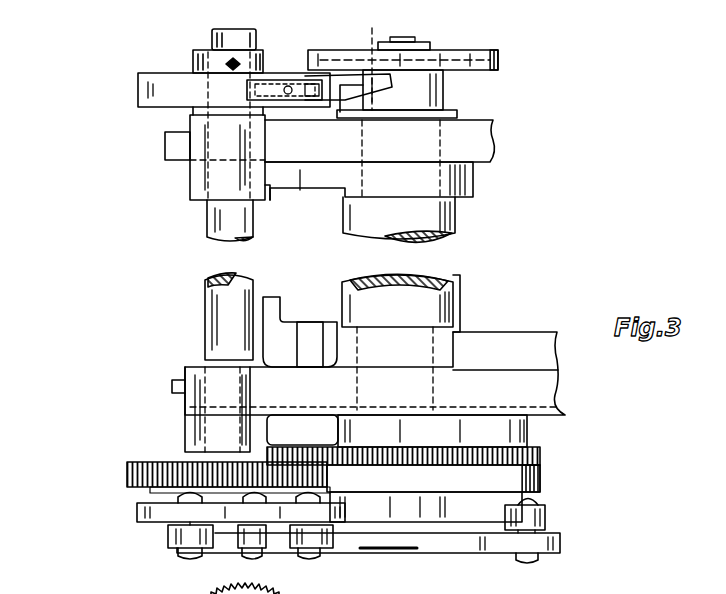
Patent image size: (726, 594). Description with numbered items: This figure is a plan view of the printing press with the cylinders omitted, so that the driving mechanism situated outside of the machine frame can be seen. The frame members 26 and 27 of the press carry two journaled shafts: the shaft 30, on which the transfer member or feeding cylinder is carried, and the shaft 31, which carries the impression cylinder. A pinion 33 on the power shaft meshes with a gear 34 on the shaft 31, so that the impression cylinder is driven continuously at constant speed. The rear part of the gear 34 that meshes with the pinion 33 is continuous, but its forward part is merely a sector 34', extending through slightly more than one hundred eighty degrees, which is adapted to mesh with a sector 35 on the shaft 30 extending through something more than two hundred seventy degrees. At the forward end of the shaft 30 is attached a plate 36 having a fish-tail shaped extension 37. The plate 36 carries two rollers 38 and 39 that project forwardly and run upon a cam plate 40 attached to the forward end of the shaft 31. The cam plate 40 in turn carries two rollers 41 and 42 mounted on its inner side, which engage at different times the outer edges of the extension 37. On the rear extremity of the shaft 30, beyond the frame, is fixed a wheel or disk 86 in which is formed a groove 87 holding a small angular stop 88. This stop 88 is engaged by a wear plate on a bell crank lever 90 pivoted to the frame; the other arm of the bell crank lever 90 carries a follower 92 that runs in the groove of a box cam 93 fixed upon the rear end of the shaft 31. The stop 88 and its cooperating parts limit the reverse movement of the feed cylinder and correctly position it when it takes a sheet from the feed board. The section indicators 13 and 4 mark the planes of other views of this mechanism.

The frame member 26 is at (500, 340).
The frame member 27 is at (488, 150).
The shaft 30 is at (212, 228).
The shaft 31 is at (443, 108).
The pinion 33 is at (523, 445).
The gear 34 is at (422, 458).
The sector 34' is at (454, 479).
The sector 35 is at (145, 463).
The plate 36 is at (150, 520).
The extension 37 is at (370, 508).
The roller 38 is at (171, 535).
The roller 39 is at (327, 552).
The cam plate 40 is at (463, 538).
The roller 41 is at (296, 549).
The roller 42 is at (548, 523).
The wheel or disk 86 is at (157, 76).
The groove 87 is at (272, 78).
The angular stop 88 is at (300, 76).
The bell crank lever 90 is at (325, 112).
The follower 92 is at (380, 44).
The box cam 93 is at (327, 52).
The section line 13 is at (131, 90).
The section line 4 is at (160, 568).